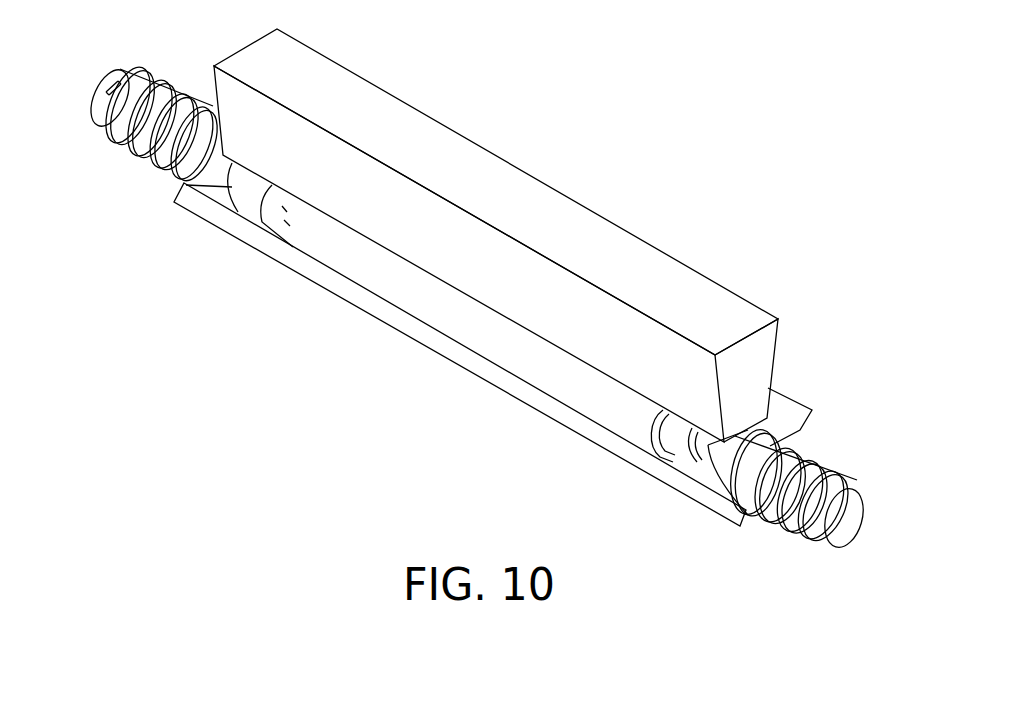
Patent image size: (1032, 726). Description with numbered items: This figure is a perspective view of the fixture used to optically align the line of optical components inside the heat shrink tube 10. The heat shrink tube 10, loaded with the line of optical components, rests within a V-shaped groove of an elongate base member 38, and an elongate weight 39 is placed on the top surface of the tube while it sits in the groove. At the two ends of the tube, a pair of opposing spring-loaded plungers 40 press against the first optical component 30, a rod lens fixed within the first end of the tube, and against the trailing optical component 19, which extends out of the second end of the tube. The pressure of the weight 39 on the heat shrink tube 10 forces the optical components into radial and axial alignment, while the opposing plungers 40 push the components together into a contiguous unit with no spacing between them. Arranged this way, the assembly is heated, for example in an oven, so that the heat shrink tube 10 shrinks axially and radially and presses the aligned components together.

The heat shrink tube 10 is at (370, 261).
The trailing optical component 19 is at (700, 460).
The first optical component 30 is at (246, 197).
The elongate base member 38 is at (485, 372).
The elongate weight 39 is at (482, 158).
The spring-loaded plungers 40 is at (102, 100).